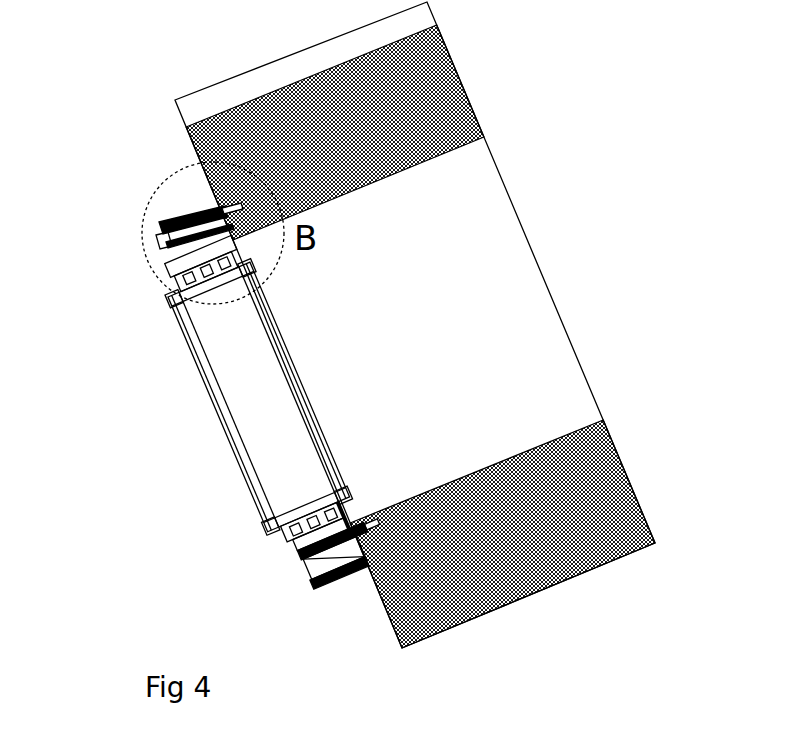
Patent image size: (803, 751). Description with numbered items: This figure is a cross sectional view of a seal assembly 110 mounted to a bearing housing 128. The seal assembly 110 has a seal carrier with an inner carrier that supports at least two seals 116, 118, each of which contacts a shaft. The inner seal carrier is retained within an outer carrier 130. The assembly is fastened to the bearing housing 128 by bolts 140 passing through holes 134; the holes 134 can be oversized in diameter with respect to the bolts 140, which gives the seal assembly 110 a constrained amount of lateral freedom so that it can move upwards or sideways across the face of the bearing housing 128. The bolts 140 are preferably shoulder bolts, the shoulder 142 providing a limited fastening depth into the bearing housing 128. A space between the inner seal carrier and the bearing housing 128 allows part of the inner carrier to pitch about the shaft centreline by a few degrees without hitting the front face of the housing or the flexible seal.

The seal assembly 110 is at (184, 254).
The seal 116 is at (182, 258).
The seal 118 is at (330, 508).
The bearing housing 128 is at (382, 617).
The outer carrier 130 is at (177, 263).
The holes 134 is at (315, 572).
The bolts 140 is at (157, 241).
The shoulder 142 is at (222, 208).